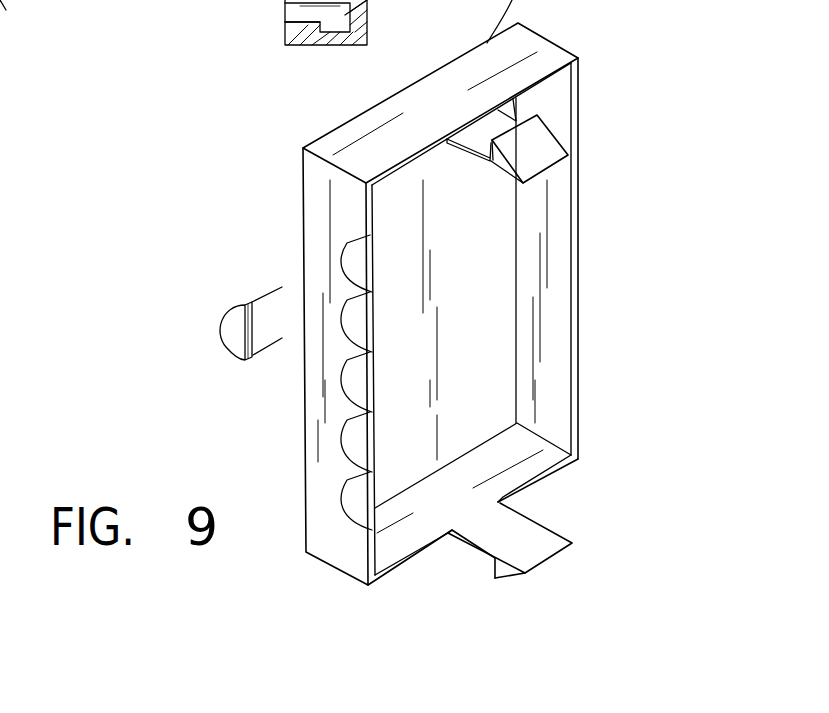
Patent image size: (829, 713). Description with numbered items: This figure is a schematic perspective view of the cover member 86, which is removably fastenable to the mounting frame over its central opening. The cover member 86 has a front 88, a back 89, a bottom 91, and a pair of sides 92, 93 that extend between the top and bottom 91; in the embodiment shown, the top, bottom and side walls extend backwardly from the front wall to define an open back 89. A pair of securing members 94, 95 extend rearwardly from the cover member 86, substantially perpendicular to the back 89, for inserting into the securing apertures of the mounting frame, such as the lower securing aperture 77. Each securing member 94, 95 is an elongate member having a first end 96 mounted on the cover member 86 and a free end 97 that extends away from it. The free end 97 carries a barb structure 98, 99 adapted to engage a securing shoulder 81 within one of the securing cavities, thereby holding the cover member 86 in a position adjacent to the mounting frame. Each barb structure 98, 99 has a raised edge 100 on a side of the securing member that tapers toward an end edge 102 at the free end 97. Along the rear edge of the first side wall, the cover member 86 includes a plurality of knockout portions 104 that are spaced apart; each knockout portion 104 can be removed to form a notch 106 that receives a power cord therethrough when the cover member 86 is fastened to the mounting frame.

The lower securing aperture 77 is at (283, 15).
The securing shoulder 81 is at (330, 24).
The cover member 86 is at (263, 173).
The front 88 is at (305, 485).
The back 89 is at (490, 333).
The bottom 91 is at (490, 437).
The side 92 is at (303, 232).
The side 93 is at (516, 275).
The securing member 94 is at (571, 123).
The securing member 95 is at (563, 512).
The first end 96 is at (482, 513).
The free end 97 is at (560, 551).
The barb structure 98 is at (538, 142).
The barb structure 99 is at (517, 574).
The raised edge 100 is at (535, 127).
The end edge 102 is at (545, 170).
The knockout portion 104 is at (233, 335).
The notch 106 is at (343, 270).